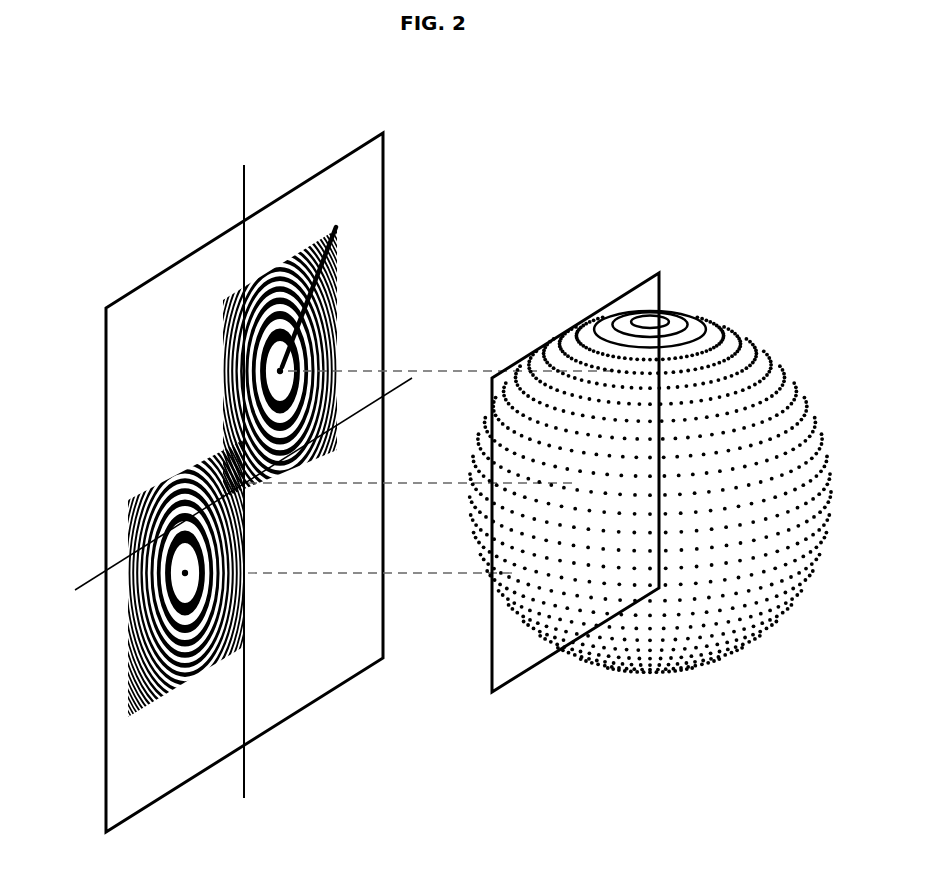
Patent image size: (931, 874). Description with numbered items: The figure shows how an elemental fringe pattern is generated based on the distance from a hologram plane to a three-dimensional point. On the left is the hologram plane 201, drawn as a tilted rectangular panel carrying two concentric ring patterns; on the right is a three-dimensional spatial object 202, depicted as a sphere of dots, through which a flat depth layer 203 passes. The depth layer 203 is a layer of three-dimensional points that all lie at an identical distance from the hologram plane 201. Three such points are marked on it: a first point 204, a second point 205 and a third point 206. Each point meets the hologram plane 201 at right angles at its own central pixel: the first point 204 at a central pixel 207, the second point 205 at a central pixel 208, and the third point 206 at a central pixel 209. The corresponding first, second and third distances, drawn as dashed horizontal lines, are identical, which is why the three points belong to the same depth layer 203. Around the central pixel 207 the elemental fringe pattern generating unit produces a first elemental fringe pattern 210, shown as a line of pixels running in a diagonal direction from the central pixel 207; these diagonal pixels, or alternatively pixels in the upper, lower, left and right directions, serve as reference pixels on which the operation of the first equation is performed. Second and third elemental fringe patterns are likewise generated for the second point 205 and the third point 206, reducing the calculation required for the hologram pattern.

The hologram plane 201 is at (383, 133).
The 3D spatial object 202 is at (723, 328).
The depth layer 203 is at (659, 273).
The first 3D point 204 is at (607, 372).
The second 3D point 205 is at (575, 483).
The third 3D point 206 is at (518, 573).
The central pixel 207 is at (285, 357).
The central pixel 208 is at (232, 462).
The central pixel 209 is at (185, 573).
The first elemental fringe pattern 210 is at (311, 283).